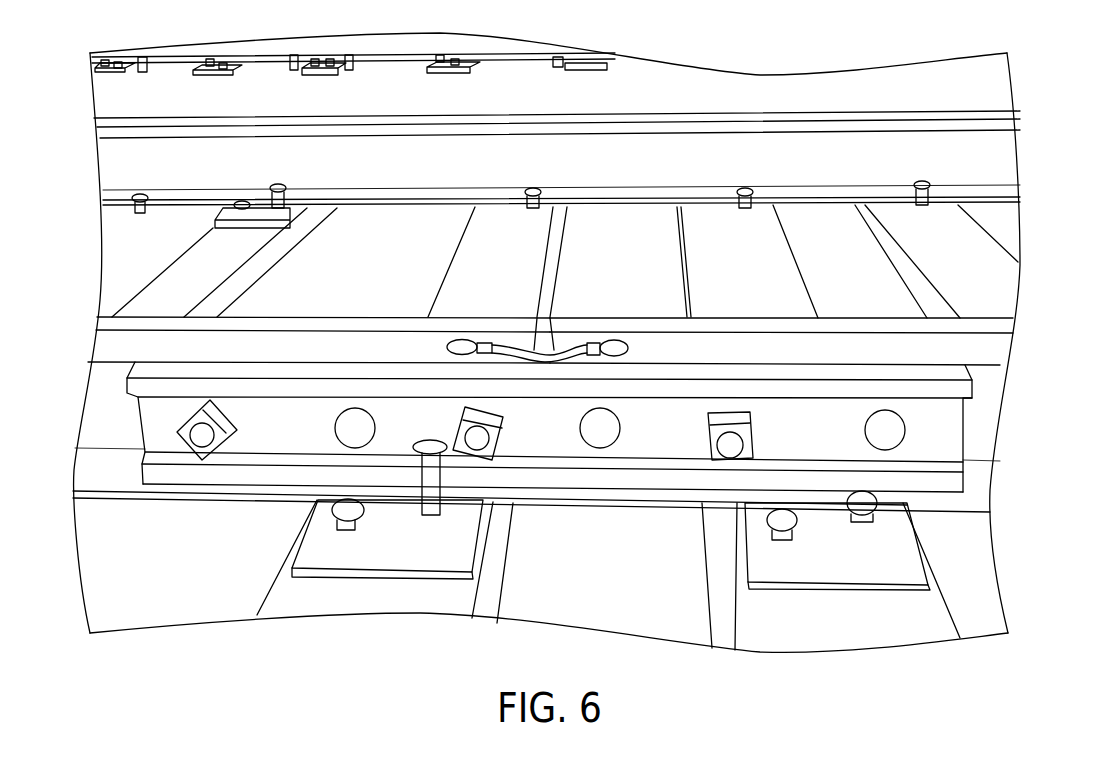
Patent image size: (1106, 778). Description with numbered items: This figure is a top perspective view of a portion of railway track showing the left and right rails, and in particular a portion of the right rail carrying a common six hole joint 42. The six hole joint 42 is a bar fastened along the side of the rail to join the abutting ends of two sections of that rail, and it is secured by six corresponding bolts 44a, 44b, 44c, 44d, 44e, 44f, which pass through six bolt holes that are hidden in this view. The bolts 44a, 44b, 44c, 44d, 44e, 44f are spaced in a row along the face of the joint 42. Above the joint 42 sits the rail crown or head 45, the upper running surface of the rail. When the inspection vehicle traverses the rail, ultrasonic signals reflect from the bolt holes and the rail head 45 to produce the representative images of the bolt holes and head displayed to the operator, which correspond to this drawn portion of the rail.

The six hole joint 42 is at (847, 387).
The bolt 44a is at (202, 440).
The bolt 44b is at (355, 432).
The bolt 44c is at (477, 440).
The bolt 44d is at (600, 430).
The bolt 44e is at (730, 445).
The bolt 44f is at (885, 432).
The rail crown or head 45 is at (557, 350).